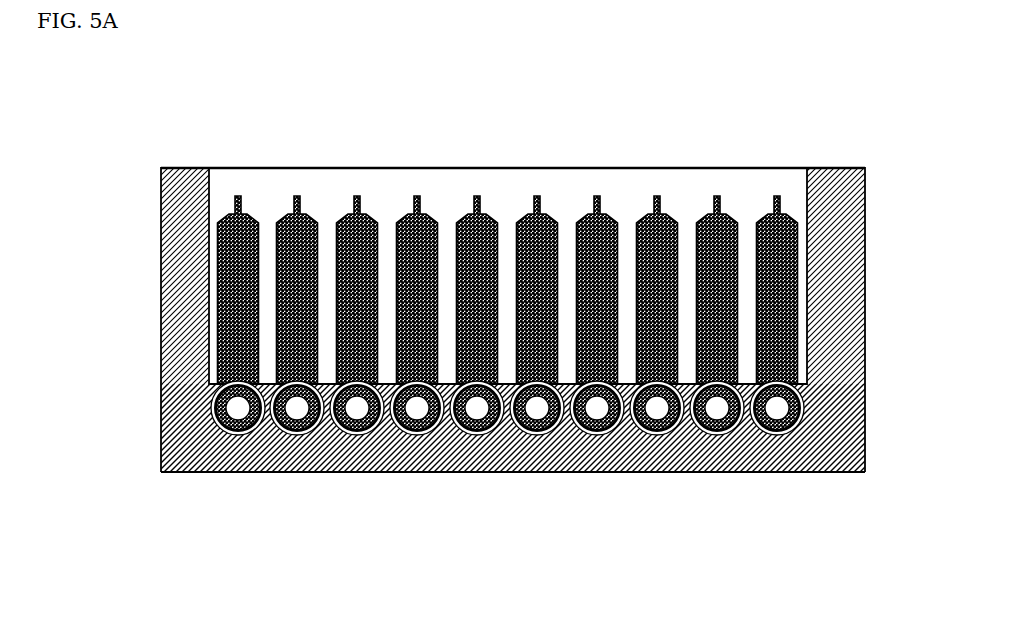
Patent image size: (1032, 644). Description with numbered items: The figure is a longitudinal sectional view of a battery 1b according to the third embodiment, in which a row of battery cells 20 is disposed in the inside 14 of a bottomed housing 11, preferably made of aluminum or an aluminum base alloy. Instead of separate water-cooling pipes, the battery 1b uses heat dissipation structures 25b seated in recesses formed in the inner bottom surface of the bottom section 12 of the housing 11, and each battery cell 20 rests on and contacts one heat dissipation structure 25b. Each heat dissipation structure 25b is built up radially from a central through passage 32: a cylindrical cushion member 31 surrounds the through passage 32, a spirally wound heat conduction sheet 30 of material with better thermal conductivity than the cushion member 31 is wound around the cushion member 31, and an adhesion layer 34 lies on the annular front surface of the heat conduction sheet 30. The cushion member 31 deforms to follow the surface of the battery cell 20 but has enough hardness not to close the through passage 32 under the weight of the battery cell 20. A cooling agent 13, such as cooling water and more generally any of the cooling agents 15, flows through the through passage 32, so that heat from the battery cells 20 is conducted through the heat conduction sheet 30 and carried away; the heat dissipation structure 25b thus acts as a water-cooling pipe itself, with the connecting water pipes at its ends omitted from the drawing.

The battery 1b is at (889, 109).
The housing 11 is at (852, 218).
The bottom section 12 is at (792, 462).
The cooling agent 13 is at (213, 428).
The inside of the housing 14 is at (224, 176).
The cooling agents 15 is at (451, 439).
The battery cell 20 is at (244, 221).
The heat dissipation structure 25b is at (118, 360).
The heat conduction sheet 30 is at (217, 393).
The cushion member 31 is at (215, 423).
The through passage 32 is at (356, 410).
The adhesion layer 34 is at (188, 472).